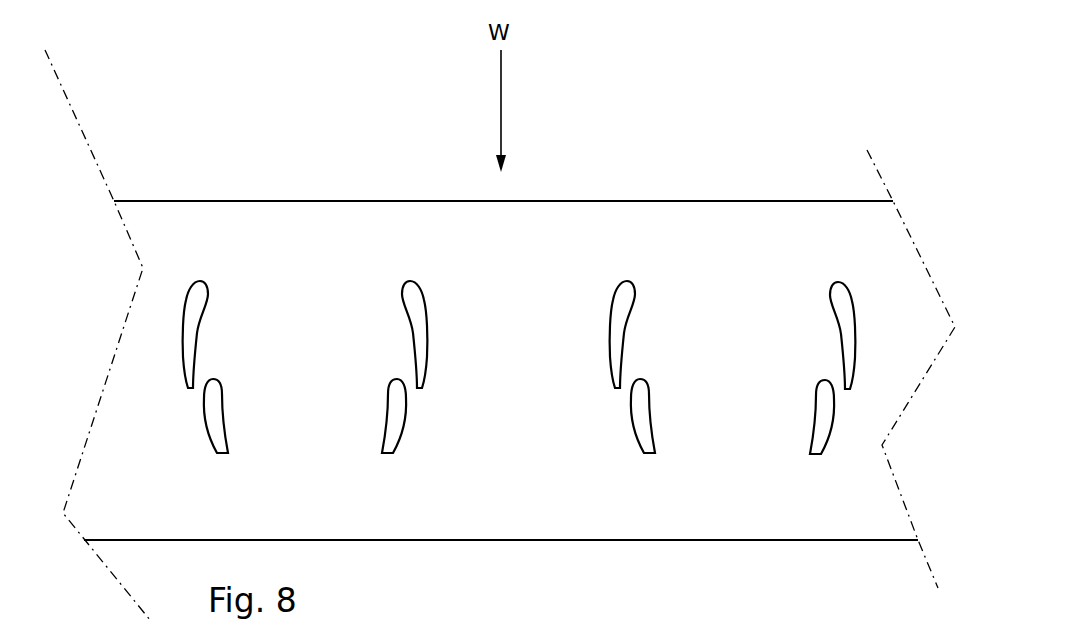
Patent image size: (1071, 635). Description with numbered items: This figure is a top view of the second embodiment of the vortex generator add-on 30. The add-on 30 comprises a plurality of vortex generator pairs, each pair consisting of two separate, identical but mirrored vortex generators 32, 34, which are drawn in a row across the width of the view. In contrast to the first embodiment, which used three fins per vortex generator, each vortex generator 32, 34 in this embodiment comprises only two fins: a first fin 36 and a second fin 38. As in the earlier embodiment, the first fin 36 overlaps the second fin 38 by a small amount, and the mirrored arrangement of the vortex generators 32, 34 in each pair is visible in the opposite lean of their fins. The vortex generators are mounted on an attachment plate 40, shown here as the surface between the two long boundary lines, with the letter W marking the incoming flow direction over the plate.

The vortex generator add-on 30 is at (378, 108).
The vortex generator 32 is at (870, 293).
The vortex generator 34 is at (585, 280).
The first fin 36 is at (835, 318).
The second fin 38 is at (812, 422).
The attachment plate 40 is at (732, 223).